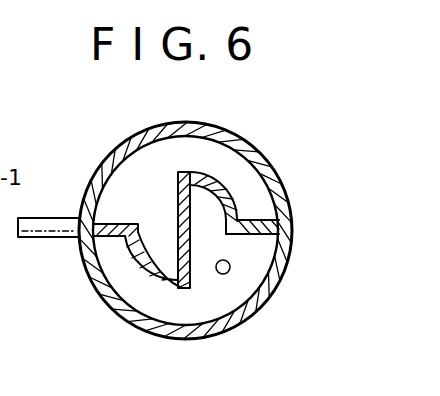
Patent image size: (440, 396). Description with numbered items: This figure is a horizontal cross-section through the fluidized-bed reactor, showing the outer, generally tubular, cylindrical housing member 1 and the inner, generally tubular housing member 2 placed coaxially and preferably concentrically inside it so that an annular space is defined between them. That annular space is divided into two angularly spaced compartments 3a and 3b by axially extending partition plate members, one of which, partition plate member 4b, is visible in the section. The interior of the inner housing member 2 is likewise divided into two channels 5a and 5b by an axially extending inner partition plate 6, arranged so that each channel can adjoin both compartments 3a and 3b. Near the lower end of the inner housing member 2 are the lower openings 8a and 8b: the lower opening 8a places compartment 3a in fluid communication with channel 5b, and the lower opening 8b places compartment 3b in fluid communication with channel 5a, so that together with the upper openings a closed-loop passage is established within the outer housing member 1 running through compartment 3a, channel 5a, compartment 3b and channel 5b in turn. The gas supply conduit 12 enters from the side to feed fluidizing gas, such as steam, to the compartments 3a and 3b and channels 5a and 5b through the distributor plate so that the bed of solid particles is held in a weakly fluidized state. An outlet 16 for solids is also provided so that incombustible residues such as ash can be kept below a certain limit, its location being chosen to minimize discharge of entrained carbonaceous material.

The outer housing member 1 is at (280, 197).
The inner housing member 2 is at (120, 297).
The compartment 3a is at (155, 297).
The compartment 3b is at (167, 153).
The partition plate member 4b is at (258, 233).
The channel 5a is at (162, 236).
The channel 5b is at (212, 223).
The inner partition plate 6 is at (189, 210).
The lower opening 8a is at (212, 285).
The lower opening 8b is at (122, 207).
The gas supply conduit 12 is at (40, 240).
The outlet 16 is at (229, 272).